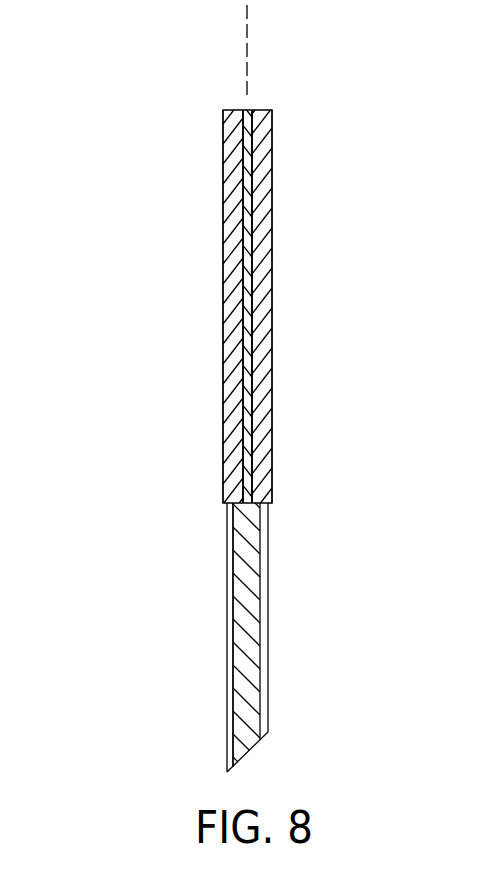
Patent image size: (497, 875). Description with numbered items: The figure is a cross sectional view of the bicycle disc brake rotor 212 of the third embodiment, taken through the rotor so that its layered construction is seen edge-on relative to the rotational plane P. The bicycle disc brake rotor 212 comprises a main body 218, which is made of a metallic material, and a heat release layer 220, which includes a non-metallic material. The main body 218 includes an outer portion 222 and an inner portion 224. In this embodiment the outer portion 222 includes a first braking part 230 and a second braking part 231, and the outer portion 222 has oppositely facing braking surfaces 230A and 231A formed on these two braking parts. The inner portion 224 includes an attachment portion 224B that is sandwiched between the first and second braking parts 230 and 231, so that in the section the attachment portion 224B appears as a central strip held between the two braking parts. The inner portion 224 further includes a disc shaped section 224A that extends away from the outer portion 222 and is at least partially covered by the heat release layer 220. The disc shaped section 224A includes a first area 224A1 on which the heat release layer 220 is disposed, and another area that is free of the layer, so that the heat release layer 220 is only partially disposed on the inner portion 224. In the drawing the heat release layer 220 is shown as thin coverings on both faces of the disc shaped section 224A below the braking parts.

The rotational plane P is at (248, 23).
The bicycle disc brake rotor 212 is at (235, 441).
The main body 218 is at (269, 441).
The outer portion 222 is at (249, 306).
The inner portion 224 is at (236, 441).
The attachment portion 224B is at (247, 268).
The disc shaped section 224A is at (248, 694).
The first area 224A1 is at (228, 567).
The first braking part 230 is at (223, 153).
The second braking part 231 is at (272, 162).
The braking surface 230A is at (223, 337).
The braking surface 231A is at (272, 318).
The heat release layer 220 is at (227, 620).